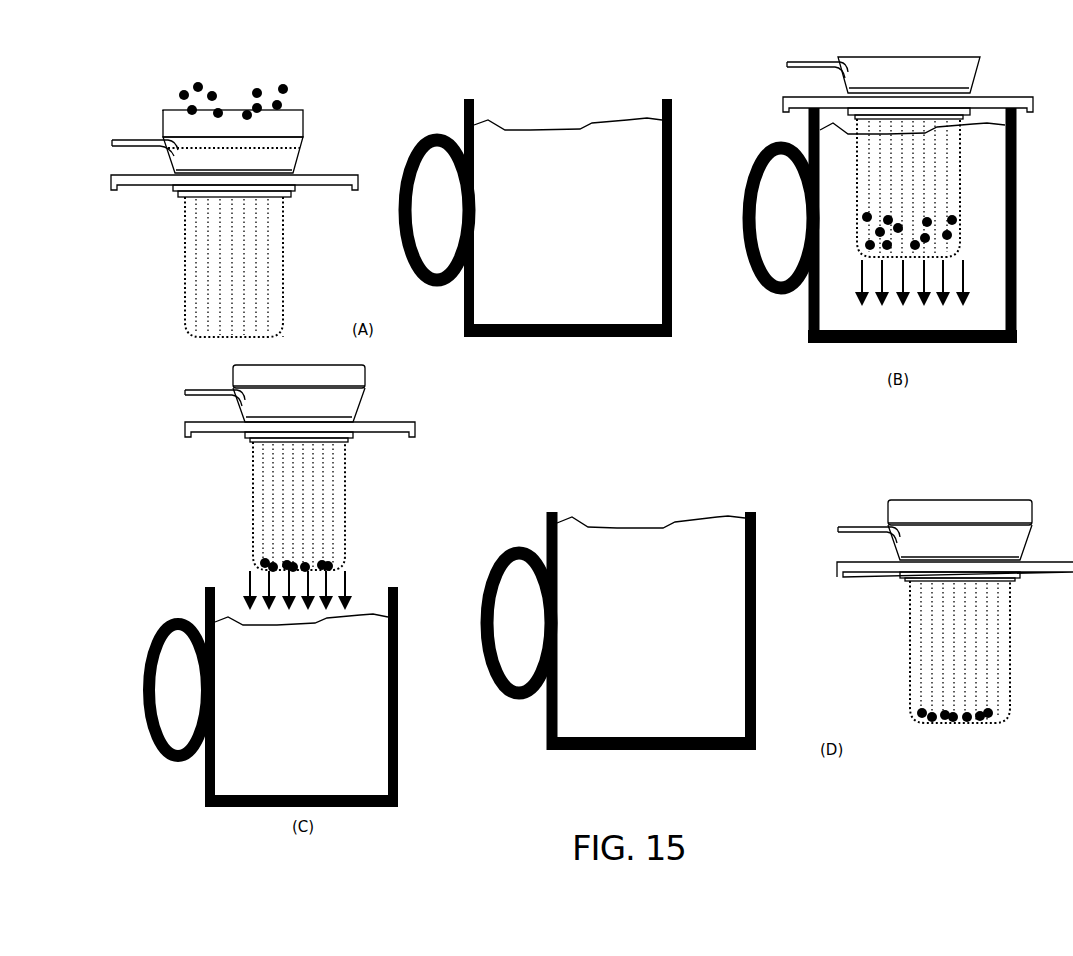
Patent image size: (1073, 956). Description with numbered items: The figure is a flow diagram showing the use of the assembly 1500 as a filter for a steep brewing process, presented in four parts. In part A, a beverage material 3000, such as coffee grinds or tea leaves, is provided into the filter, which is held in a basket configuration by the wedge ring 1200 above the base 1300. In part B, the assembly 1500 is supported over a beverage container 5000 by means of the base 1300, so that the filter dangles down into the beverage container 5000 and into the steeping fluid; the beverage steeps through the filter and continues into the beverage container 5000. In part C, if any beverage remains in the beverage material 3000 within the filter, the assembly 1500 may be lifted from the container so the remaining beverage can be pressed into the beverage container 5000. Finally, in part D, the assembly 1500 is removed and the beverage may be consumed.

The wedge ring 1200 is at (246, 162).
The base 1300 is at (245, 190).
The assembly 1500 is at (325, 147).
The beverage material 3000 is at (240, 104).
The beverage container 5000 is at (465, 313).